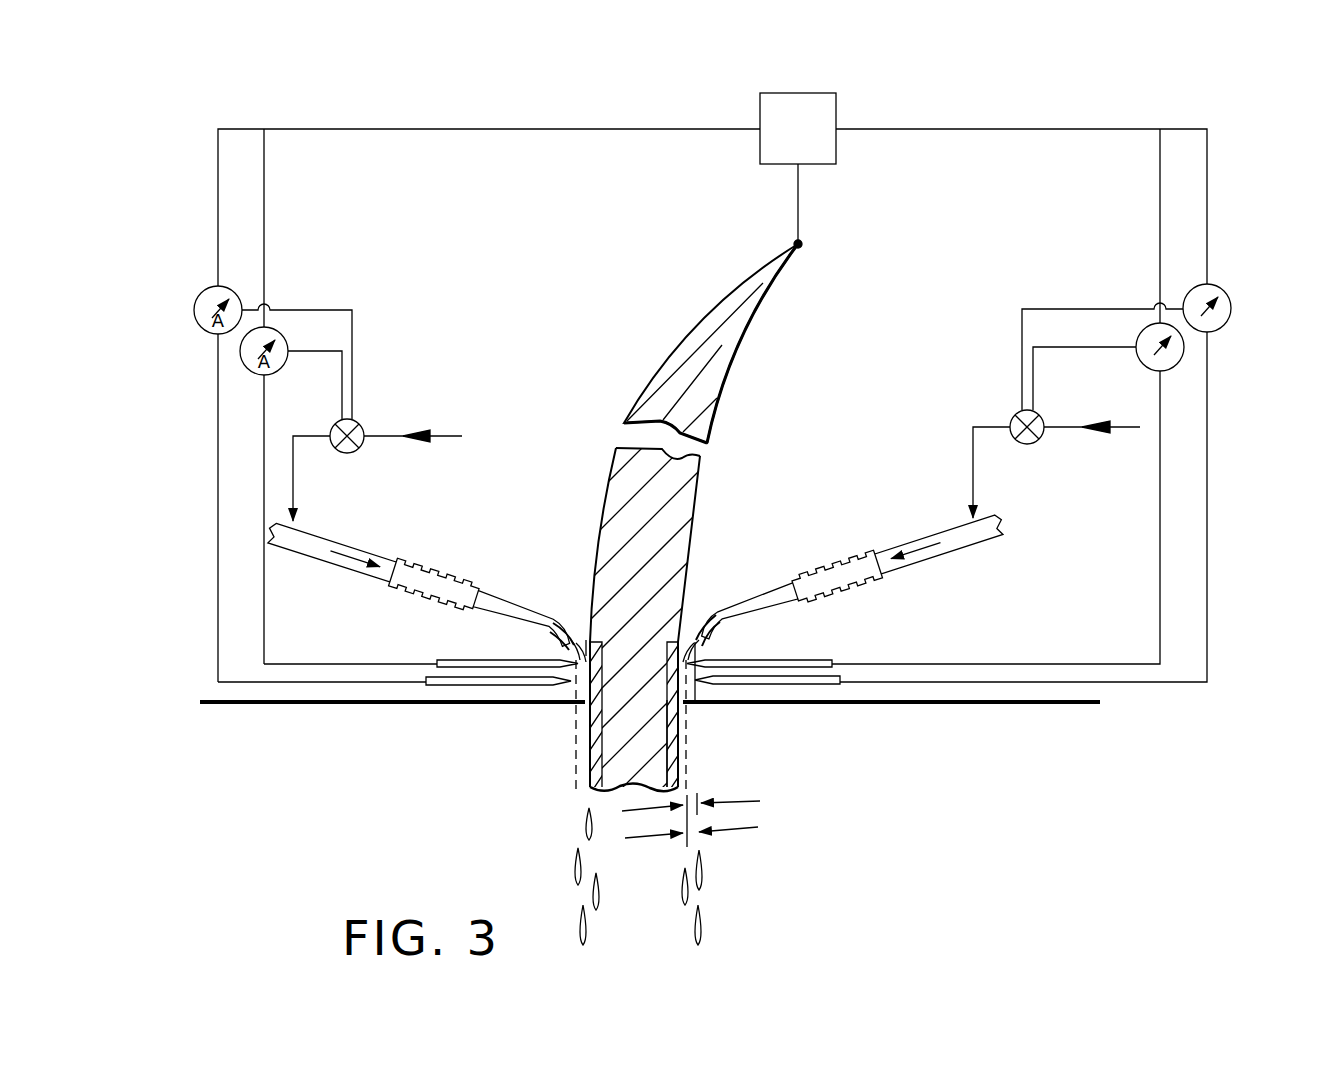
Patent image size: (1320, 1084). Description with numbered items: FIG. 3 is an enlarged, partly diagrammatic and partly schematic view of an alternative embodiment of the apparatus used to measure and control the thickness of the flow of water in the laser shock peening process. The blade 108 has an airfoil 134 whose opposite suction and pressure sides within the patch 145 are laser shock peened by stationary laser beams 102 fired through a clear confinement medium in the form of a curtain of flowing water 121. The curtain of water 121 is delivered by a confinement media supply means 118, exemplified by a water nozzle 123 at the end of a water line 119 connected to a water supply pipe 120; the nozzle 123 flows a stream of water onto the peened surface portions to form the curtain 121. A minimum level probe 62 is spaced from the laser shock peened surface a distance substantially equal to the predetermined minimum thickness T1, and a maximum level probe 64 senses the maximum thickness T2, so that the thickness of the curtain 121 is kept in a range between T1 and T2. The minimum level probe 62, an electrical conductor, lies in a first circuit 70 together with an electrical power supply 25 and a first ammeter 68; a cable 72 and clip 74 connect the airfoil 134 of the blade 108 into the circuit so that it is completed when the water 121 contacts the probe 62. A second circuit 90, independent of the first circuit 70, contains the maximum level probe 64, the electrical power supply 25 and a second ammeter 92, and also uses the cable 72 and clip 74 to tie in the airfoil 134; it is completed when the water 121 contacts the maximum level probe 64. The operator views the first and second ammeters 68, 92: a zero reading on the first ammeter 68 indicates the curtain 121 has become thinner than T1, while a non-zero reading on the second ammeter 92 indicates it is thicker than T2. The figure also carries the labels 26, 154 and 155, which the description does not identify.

The electrical power supply 25 is at (783, 143).
The valve 26 is at (1046, 418).
The minimum level probe 62 is at (455, 660).
The maximum level probe 64 is at (443, 690).
The first ammeter 68 is at (1138, 338).
The first circuit 70 is at (1157, 583).
The cable 72 is at (799, 200).
The clip 74 is at (801, 243).
The second circuit 90 is at (1212, 617).
The second ammeter 92 is at (1232, 306).
The laser beams 102 is at (257, 706).
The blade 108 is at (603, 485).
The confinement media supply means 118 is at (390, 531).
The water line 119 is at (297, 462).
The water supply pipe 120 is at (380, 433).
The curtain of flowing water 121 is at (571, 648).
The water nozzle 123 is at (540, 603).
The airfoil 134 is at (668, 452).
The patch 145 is at (676, 748).
The coating on pressure side 154 is at (683, 728).
The coating on suction side 155 is at (590, 718).
The predetermined minimum thickness T1 is at (737, 828).
The maximum thickness T2 is at (745, 801).